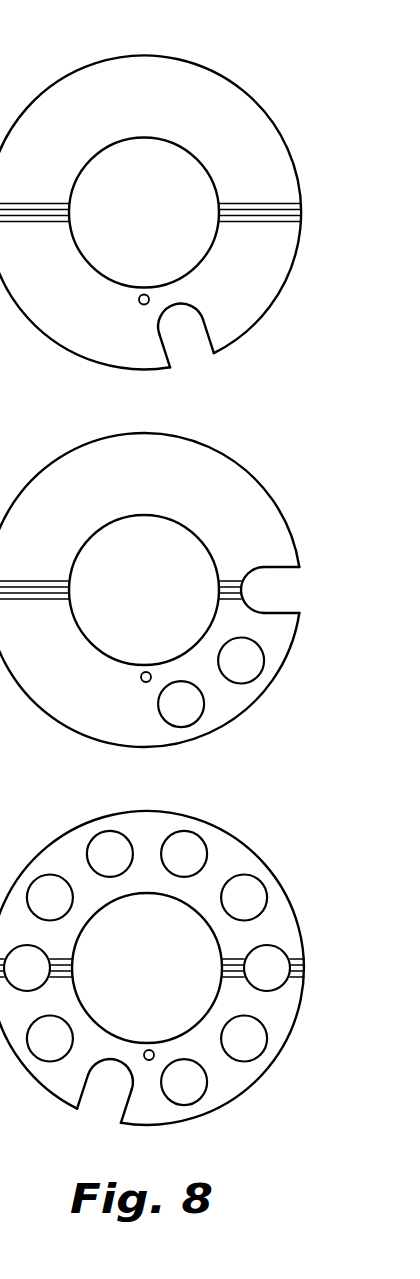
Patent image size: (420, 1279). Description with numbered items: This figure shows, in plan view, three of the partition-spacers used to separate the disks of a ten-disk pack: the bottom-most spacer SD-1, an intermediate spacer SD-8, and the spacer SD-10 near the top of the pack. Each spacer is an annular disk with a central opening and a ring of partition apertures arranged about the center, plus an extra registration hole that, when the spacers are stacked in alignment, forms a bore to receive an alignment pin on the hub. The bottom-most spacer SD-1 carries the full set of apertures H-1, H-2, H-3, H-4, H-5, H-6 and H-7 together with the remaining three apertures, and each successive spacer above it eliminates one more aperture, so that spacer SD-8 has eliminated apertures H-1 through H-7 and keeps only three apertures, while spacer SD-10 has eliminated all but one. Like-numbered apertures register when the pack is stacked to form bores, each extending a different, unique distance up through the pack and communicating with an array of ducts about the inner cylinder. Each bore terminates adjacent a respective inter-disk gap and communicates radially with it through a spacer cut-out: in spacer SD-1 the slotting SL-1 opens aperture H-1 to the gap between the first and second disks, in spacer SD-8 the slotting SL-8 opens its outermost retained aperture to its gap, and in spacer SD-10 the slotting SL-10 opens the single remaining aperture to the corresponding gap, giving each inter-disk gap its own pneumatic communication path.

The spacer disk SD-10 is at (195, 62).
The spacer disk SD-8 is at (208, 446).
The spacer disk SD-1 is at (152, 958).
The spacer cut-out SL-10 is at (189, 360).
The spacer cut-out SL-8 is at (300, 609).
The spacer cut-out SL-1 is at (96, 1110).
The partition aperture H-1 is at (110, 1076).
The partition aperture H-2 is at (50, 1039).
The partition aperture H-3 is at (27, 968).
The partition aperture H-4 is at (50, 898).
The partition aperture H-5 is at (110, 854).
The partition aperture H-6 is at (184, 854).
The partition aperture H-7 is at (244, 898).